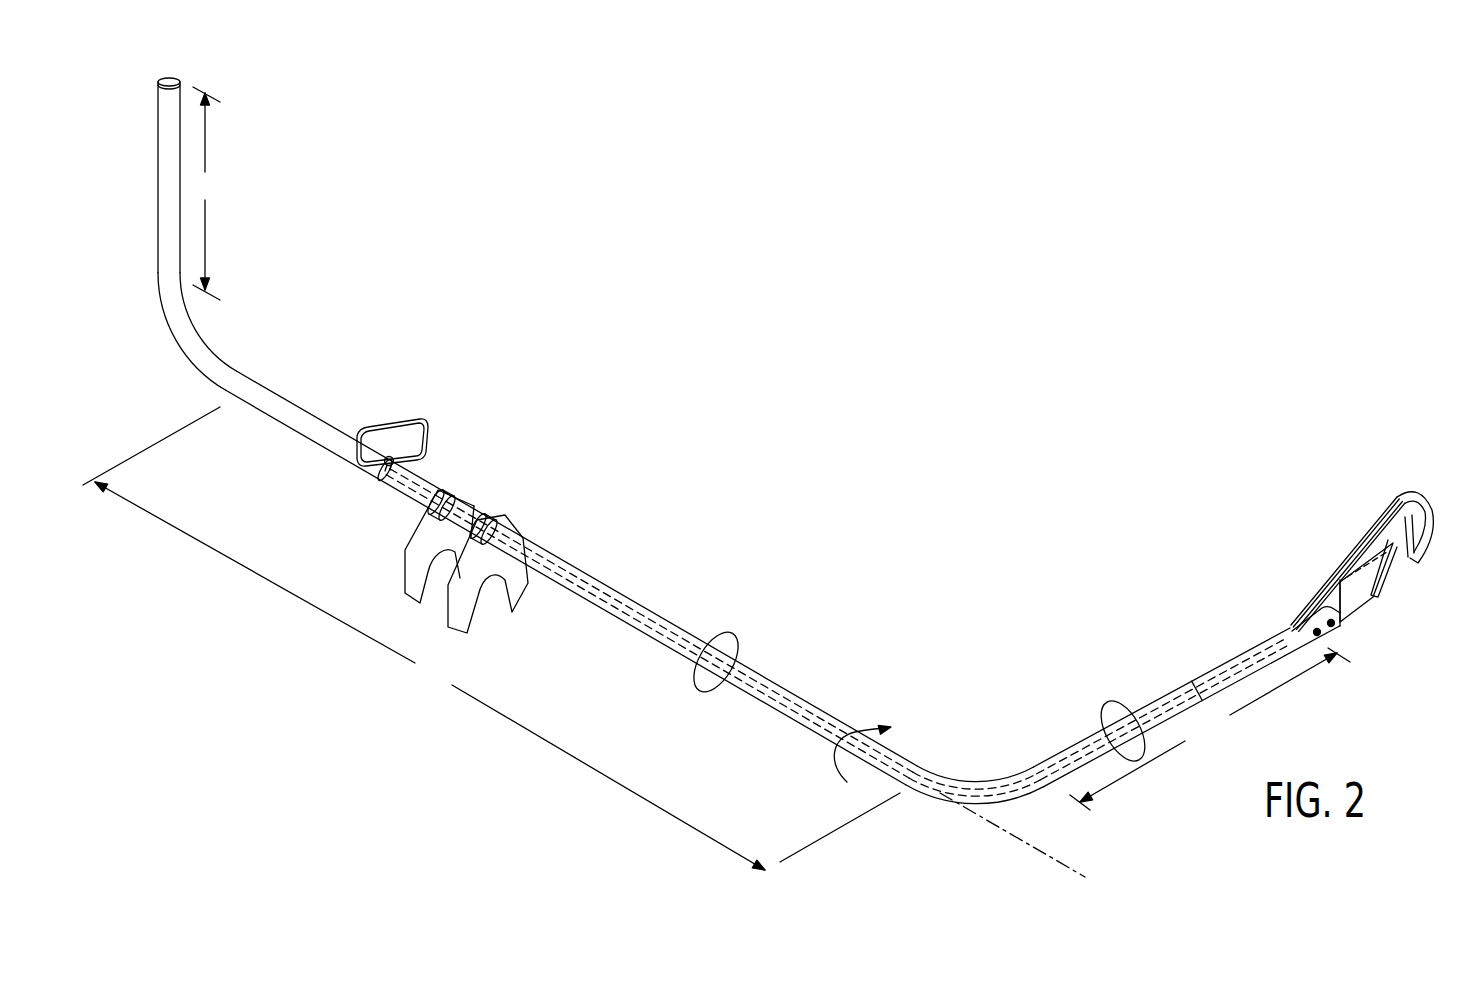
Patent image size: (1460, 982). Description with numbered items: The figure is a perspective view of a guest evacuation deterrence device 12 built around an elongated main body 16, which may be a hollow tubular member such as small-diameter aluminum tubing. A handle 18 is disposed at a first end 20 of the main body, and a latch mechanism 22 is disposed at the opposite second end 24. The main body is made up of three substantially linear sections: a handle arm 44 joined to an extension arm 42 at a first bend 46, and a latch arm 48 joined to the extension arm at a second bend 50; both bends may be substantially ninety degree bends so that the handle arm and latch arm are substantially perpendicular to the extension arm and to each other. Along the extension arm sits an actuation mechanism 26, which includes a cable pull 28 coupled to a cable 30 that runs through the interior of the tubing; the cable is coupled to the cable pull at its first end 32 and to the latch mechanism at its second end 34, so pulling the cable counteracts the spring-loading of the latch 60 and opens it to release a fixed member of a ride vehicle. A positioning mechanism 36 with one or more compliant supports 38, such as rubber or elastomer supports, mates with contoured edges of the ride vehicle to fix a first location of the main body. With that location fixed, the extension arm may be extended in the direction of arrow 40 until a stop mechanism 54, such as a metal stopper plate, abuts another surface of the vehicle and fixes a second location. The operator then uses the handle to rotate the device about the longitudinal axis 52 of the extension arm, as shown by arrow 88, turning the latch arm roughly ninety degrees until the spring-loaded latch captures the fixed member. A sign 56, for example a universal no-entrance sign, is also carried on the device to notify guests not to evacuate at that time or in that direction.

The guest evacuation deterrence device 12 is at (963, 312).
The elongated main body 16 is at (812, 730).
The handle 18 is at (158, 242).
The first end 20 is at (180, 73).
The latch mechanism 22 is at (1350, 550).
The second end 24 is at (1405, 502).
The actuation mechanism 26 is at (345, 483).
The cable pull 28 is at (385, 428).
The cable 30 is at (428, 478).
The first end of cable 32 is at (386, 485).
The second end of cable 34 is at (1322, 633).
The positioning mechanism 36 is at (493, 634).
The compliant supports 38 is at (457, 630).
The arrow 40 is at (635, 683).
The extension arm 42 is at (491, 638).
The handle arm 44 is at (207, 193).
The first bend 46 is at (176, 317).
The latch arm 48 is at (1210, 729).
The second bend 50 is at (995, 805).
The longitudinal axis 52 is at (1037, 848).
The stop mechanism 54 is at (738, 643).
The sign 56 is at (1117, 707).
The latch 60 is at (1383, 567).
The arrow 88 is at (862, 733).